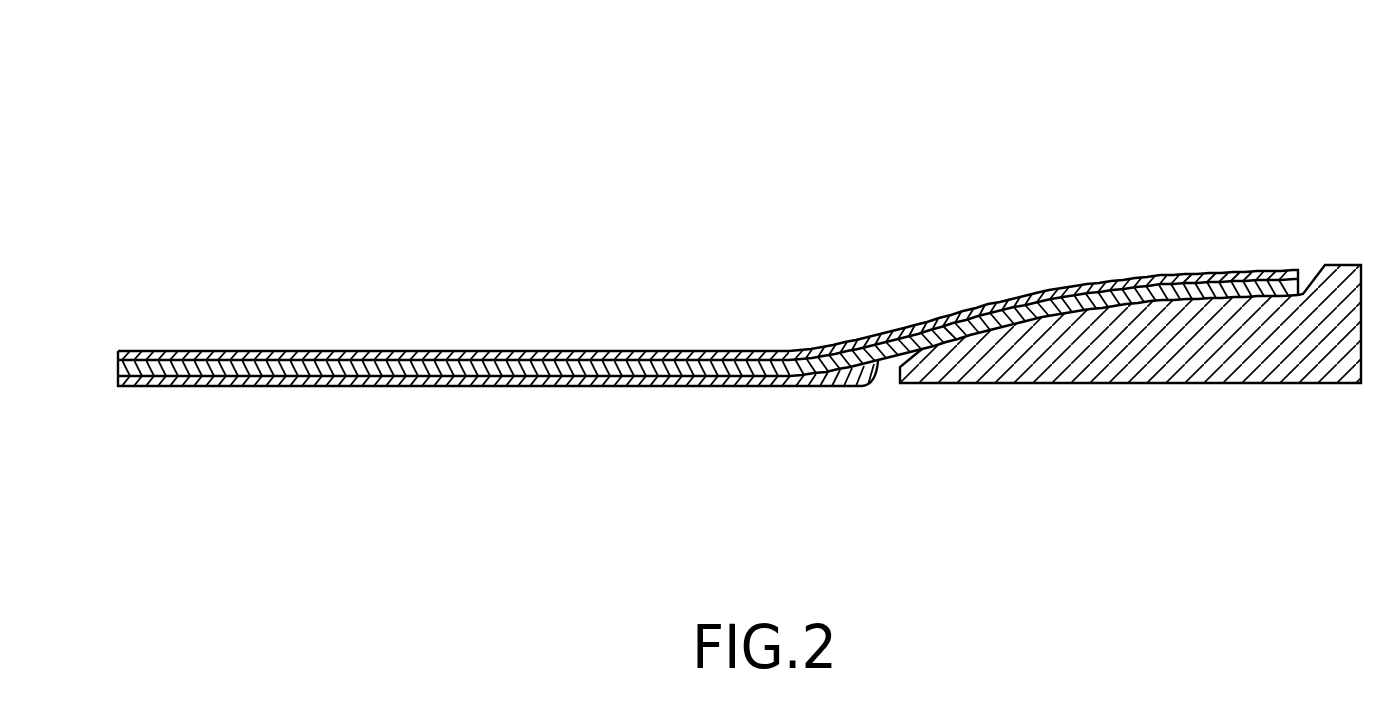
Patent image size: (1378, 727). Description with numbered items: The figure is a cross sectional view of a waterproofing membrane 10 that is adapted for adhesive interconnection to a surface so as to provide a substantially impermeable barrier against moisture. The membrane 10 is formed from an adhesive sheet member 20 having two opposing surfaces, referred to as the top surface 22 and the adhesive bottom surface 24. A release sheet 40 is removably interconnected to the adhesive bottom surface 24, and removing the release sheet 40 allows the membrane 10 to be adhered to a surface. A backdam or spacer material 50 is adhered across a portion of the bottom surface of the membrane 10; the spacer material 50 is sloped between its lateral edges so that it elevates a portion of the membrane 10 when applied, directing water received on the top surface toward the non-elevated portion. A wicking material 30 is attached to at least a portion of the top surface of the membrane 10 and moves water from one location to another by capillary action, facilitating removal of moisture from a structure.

The membrane 10 is at (353, 168).
The adhesive sheet member 20 is at (118, 368).
The top surface 22 is at (485, 362).
The adhesive bottom surface 24 is at (380, 380).
The wicking material 30 is at (118, 352).
The release sheet 40 is at (137, 386).
The spacer material 50 is at (1195, 355).